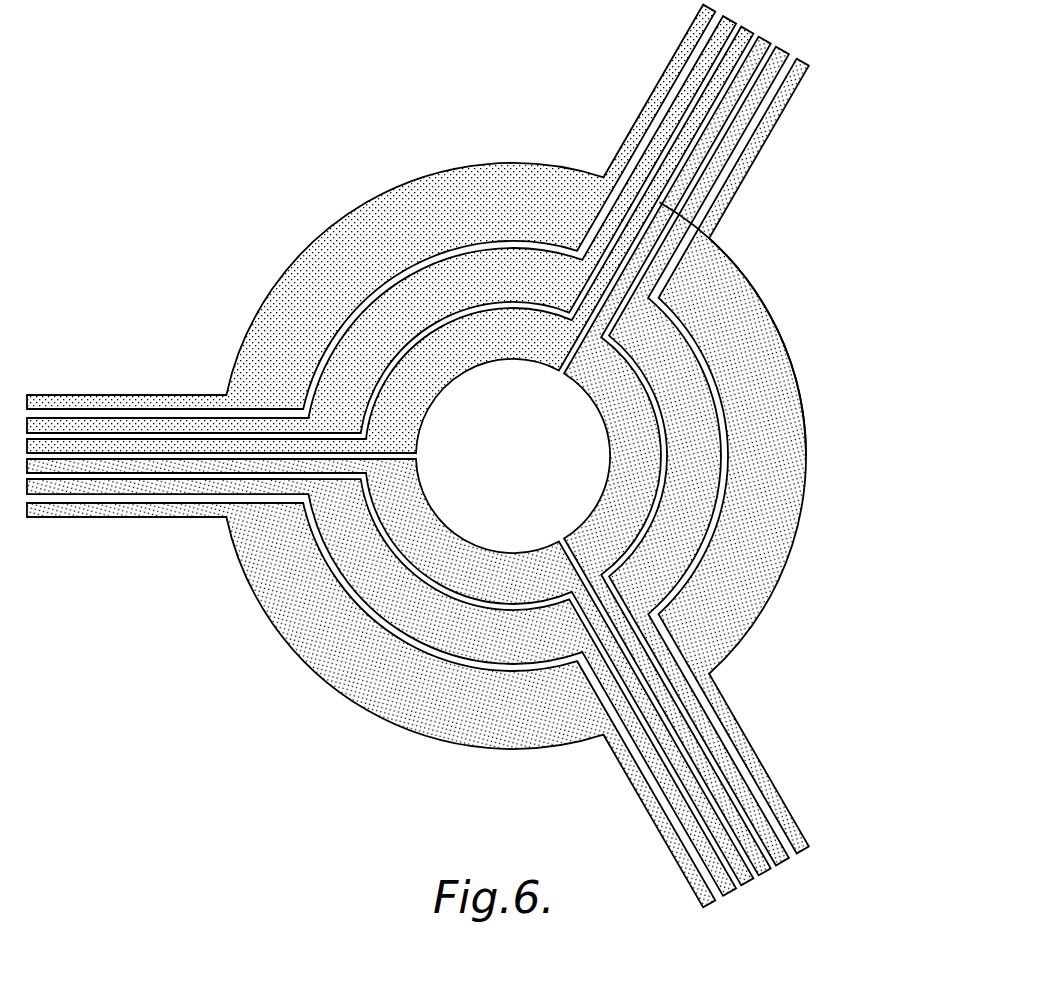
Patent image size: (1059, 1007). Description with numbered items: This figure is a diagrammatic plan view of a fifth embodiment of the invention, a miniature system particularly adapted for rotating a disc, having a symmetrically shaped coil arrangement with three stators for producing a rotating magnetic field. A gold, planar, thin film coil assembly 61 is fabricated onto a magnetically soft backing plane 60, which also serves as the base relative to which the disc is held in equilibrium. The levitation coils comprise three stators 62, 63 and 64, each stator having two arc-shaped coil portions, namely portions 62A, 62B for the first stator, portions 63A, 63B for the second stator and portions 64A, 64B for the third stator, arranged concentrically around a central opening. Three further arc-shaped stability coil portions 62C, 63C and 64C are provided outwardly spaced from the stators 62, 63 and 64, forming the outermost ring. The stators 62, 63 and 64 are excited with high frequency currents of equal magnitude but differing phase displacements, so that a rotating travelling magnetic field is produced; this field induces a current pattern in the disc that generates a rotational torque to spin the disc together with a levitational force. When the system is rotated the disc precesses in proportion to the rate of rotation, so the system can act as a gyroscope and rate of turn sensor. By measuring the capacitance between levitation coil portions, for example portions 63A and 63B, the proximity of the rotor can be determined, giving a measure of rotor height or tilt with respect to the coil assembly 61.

The magnetically soft backing plane 60 is at (539, 506).
The coil assembly 61 is at (790, 311).
The stator 62 is at (727, 458).
The arc-shaped coil portion 62A is at (653, 470).
The arc-shaped coil portion 62B is at (713, 470).
The arc-shaped stability coil portion 62C is at (787, 486).
The stator 63 is at (386, 628).
The arc-shaped coil portion 63A is at (492, 585).
The arc-shaped coil portion 63B is at (485, 647).
The arc-shaped stability coil portion 63C is at (450, 710).
The stator 64 is at (390, 229).
The arc-shaped coil portion 64A is at (440, 383).
The arc-shaped coil portion 64B is at (423, 316).
The arc-shaped stability coil portion 64C is at (410, 243).